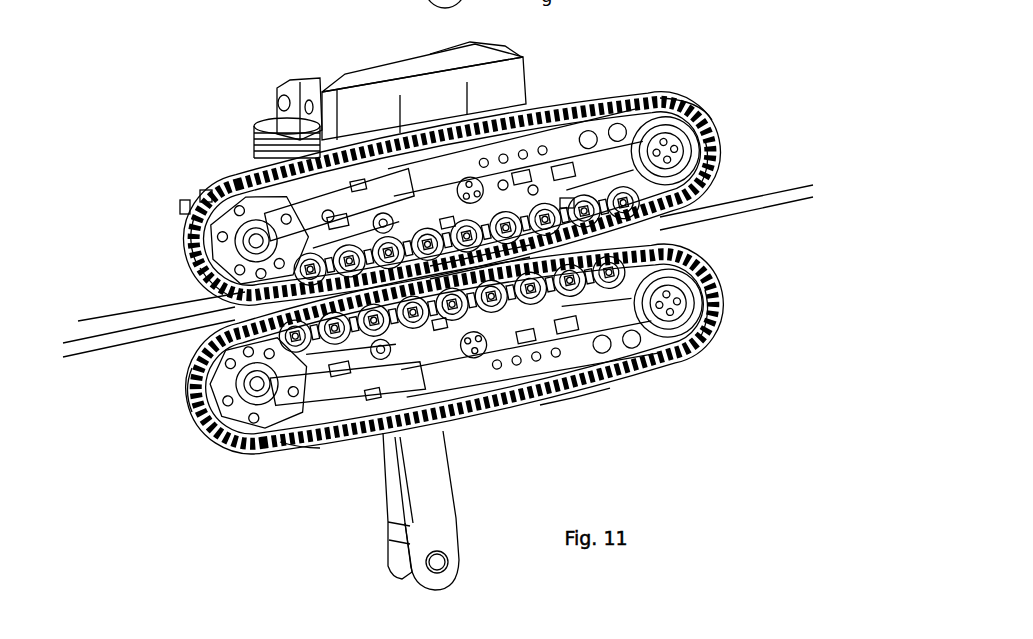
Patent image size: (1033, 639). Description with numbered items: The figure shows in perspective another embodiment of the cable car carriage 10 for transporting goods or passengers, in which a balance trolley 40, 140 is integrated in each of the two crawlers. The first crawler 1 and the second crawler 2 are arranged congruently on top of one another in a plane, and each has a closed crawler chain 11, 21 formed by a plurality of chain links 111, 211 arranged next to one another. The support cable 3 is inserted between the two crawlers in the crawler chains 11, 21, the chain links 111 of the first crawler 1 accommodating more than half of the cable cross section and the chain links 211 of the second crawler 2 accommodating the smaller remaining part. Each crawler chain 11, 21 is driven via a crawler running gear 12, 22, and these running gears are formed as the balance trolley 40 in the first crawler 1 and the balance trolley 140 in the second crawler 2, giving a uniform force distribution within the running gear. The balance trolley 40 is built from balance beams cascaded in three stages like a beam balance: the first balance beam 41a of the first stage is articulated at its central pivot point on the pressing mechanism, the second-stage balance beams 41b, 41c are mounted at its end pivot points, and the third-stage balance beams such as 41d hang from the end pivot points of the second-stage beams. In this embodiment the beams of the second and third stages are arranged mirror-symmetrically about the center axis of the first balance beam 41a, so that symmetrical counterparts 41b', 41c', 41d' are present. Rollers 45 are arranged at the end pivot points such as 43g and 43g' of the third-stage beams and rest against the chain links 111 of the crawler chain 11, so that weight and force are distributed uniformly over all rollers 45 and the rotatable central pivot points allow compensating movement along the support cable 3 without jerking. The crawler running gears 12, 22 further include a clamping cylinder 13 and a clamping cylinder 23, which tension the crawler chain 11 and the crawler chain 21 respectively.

The first crawler 1 is at (650, 68).
The second crawler 2 is at (640, 386).
The support cable 3 is at (723, 217).
The cable car carriage 10 is at (226, 468).
The crawler chain 11 is at (190, 238).
The chain links 111 is at (203, 280).
The crawler running gear 12 is at (697, 115).
The clamping cylinder 13 is at (238, 178).
The crawler chain 21 is at (313, 443).
The chain links 211 is at (183, 394).
The crawler running gear 22 is at (703, 323).
The clamping cylinder 23 is at (297, 440).
The balance trolley 40 is at (702, 167).
The first balance beam of the first stage 41a is at (433, 192).
The first balance beam of the second stage 41b is at (316, 130).
The mirror-symmetric balance beam of the second stage 41b' is at (279, 126).
The second balance beam of the second stage 41c is at (557, 111).
The mirror-symmetric balance beam of the second stage 41c' is at (505, 95).
The balance beam of the third stage 41d is at (128, 166).
The mirror-symmetric balance beam of the third stage 41d' is at (107, 188).
The end pivot point 43g is at (438, 264).
The end pivot point 43g' is at (606, 116).
The rollers 45 is at (147, 312).
The balance trolley 140 is at (573, 393).